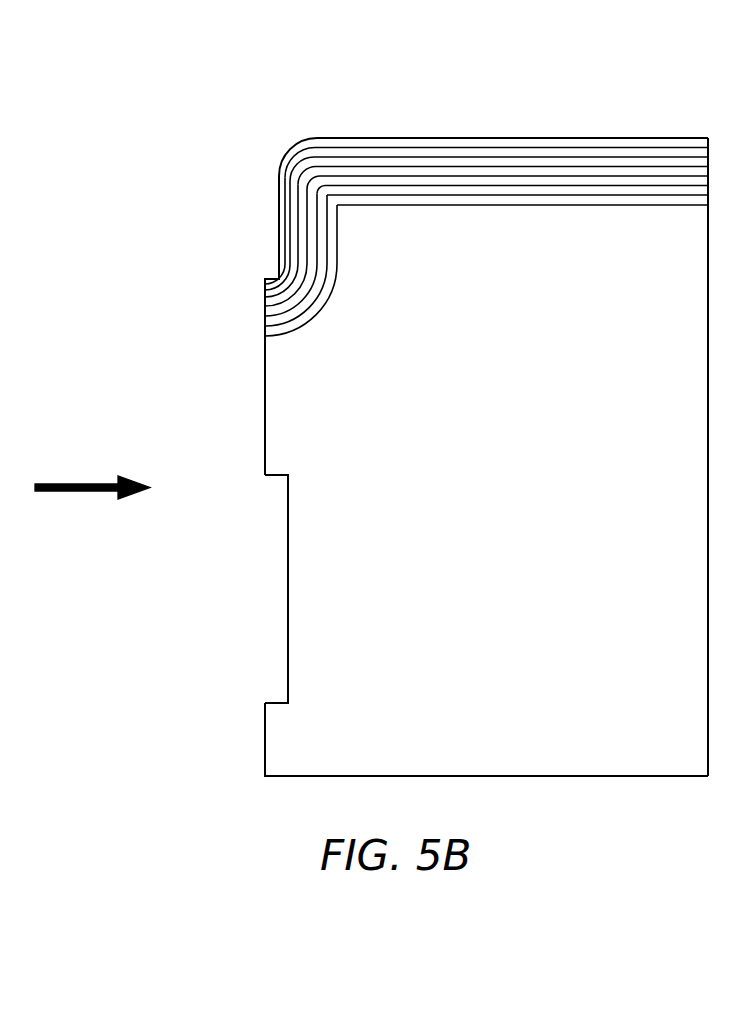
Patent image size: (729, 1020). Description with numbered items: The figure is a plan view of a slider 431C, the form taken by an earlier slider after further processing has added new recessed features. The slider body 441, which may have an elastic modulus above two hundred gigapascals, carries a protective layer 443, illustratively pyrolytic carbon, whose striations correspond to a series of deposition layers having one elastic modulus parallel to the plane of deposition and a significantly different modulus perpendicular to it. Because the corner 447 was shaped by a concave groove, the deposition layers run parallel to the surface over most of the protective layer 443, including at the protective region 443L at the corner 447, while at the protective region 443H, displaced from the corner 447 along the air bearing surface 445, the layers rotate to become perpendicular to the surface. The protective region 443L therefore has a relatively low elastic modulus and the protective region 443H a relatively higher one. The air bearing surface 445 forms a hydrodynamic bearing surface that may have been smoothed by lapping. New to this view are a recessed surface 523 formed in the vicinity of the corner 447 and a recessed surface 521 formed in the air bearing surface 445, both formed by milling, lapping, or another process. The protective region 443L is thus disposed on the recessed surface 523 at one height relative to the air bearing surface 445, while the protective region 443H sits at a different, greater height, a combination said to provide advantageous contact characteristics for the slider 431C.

The slider body 441 is at (531, 478).
The protective layer 443 is at (520, 137).
The protective region 443L is at (268, 204).
The protective region 443H is at (260, 306).
The air bearing surface 445 is at (260, 717).
The corner 447 is at (160, 90).
The recessed surface 521 is at (238, 628).
The recessed surface 523 is at (213, 235).
The slider 431C is at (596, 790).